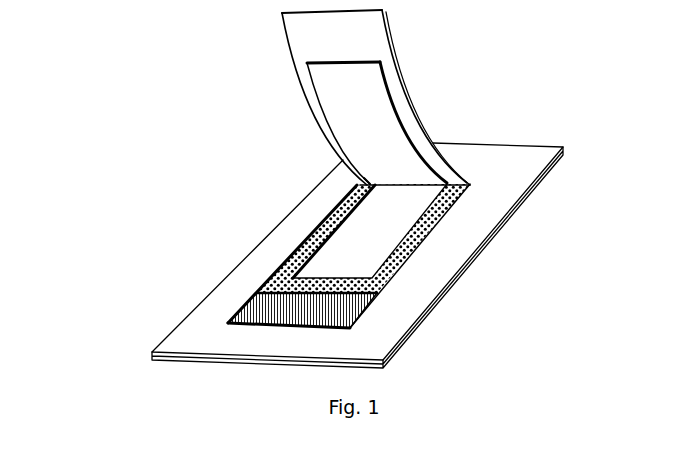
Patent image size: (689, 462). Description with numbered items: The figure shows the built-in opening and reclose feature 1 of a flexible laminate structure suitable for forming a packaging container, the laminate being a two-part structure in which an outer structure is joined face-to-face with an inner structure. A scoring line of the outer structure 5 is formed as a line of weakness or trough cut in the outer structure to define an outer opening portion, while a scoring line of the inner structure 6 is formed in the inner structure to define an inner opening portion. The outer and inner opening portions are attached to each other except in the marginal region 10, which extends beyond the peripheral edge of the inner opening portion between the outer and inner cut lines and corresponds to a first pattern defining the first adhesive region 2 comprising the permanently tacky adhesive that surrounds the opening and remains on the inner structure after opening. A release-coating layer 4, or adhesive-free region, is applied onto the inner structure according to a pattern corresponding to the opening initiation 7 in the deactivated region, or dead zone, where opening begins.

The built-in opening and reclose feature 1 is at (76, 156).
The first adhesive region 2 is at (388, 272).
The release-coating layer 4 is at (260, 313).
The scoring line of the outer structure 5 is at (397, 63).
The scoring line of the inner structure 6 is at (398, 125).
The opening initiation 7 is at (305, 42).
The marginal region 10 is at (417, 138).